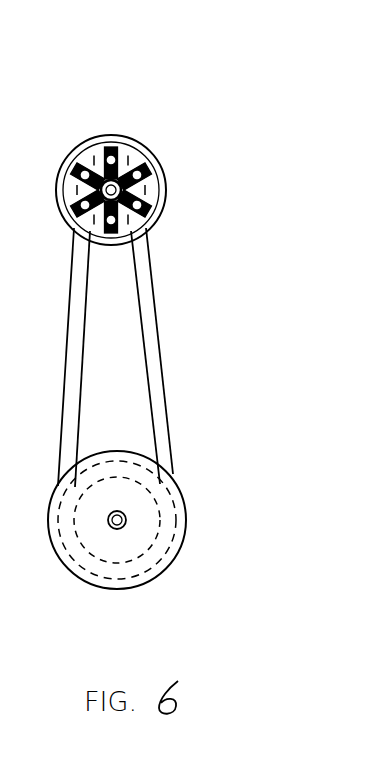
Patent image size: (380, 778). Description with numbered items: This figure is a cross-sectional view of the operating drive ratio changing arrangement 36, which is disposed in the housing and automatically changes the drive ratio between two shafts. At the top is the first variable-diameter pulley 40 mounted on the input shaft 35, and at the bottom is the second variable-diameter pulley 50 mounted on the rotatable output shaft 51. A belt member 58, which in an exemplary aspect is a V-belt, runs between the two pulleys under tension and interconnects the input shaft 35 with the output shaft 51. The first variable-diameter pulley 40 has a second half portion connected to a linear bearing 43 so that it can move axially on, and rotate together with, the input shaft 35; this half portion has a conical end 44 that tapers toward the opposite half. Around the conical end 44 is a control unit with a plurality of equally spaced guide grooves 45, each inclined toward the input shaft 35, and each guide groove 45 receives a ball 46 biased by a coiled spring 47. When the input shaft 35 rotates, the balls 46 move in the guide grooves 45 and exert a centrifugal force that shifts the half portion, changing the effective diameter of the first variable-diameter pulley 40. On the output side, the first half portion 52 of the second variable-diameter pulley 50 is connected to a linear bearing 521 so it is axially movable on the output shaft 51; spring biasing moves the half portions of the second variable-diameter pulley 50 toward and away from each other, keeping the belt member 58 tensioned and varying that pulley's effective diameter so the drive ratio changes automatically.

The first variable-diameter pulley 40 is at (107, 134).
The conical end 44 is at (82, 163).
The coiled spring 47 is at (86, 166).
The ball 46 is at (114, 164).
The guide grooves 45 is at (140, 170).
The input shaft 35 is at (122, 189).
The linear bearing 43 is at (138, 206).
The belt member 58 is at (147, 330).
The operating drive ratio changing arrangement 36 is at (277, 302).
The linear bearing 521 is at (121, 516).
The output shaft 51 is at (125, 518).
The first half portion 52 is at (176, 541).
The second variable-diameter pulley 50 is at (165, 573).